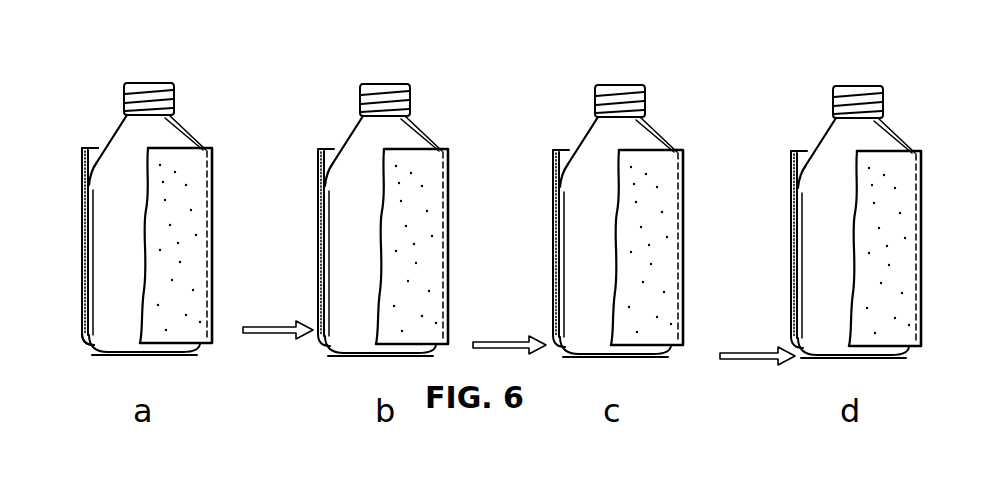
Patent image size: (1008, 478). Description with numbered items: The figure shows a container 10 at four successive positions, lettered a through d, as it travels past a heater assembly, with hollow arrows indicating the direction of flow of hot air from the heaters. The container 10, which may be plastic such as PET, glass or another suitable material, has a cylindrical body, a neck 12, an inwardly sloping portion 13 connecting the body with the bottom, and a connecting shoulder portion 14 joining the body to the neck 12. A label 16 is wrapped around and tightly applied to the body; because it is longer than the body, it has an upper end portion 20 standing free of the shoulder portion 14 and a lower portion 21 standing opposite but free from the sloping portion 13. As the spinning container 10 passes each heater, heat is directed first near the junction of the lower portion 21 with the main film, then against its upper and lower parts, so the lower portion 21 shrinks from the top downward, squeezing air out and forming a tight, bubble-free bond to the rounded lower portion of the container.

The container 10 is at (157, 226).
The neck 12 is at (112, 132).
The inwardly sloping portion 13 is at (195, 344).
The connecting portion 14 is at (212, 146).
The label 16 is at (214, 229).
The upper end portion 20 is at (84, 150).
The lower portion 21 is at (84, 340).